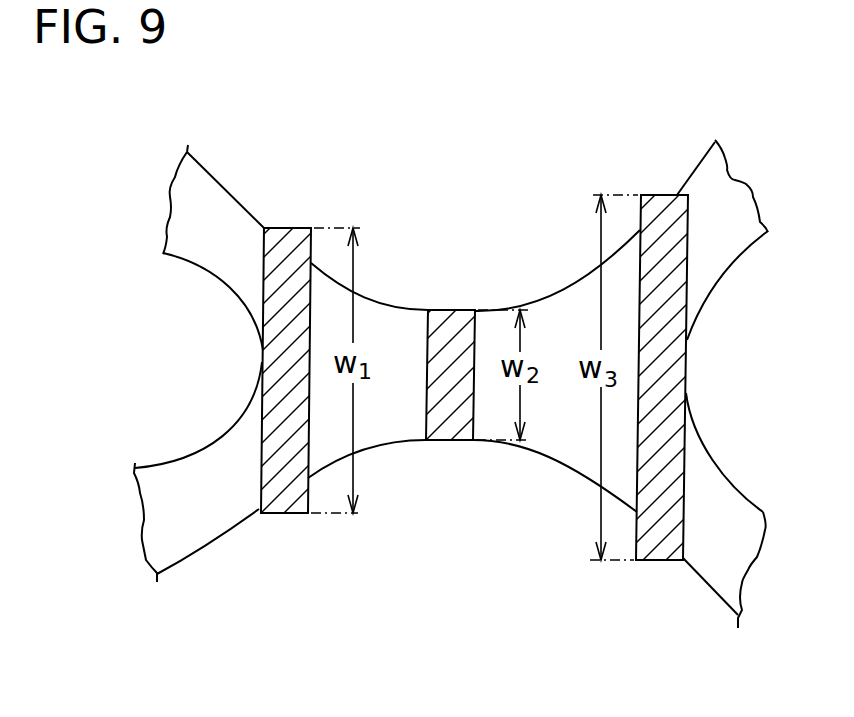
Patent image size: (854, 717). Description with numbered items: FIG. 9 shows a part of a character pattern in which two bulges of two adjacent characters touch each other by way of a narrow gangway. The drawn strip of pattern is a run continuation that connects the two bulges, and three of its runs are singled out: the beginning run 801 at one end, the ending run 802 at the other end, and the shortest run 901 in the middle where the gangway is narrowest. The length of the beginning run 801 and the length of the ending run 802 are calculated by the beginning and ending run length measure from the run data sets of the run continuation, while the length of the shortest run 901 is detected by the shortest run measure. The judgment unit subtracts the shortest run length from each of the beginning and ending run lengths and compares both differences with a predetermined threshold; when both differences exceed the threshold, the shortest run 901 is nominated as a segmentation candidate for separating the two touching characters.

The beginning run 801 is at (283, 513).
The shortest run 901 is at (446, 440).
The ending run 802 is at (660, 560).